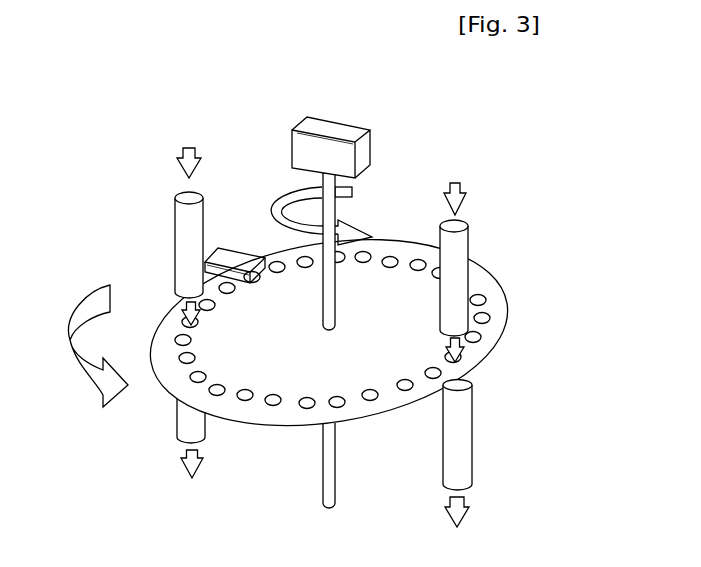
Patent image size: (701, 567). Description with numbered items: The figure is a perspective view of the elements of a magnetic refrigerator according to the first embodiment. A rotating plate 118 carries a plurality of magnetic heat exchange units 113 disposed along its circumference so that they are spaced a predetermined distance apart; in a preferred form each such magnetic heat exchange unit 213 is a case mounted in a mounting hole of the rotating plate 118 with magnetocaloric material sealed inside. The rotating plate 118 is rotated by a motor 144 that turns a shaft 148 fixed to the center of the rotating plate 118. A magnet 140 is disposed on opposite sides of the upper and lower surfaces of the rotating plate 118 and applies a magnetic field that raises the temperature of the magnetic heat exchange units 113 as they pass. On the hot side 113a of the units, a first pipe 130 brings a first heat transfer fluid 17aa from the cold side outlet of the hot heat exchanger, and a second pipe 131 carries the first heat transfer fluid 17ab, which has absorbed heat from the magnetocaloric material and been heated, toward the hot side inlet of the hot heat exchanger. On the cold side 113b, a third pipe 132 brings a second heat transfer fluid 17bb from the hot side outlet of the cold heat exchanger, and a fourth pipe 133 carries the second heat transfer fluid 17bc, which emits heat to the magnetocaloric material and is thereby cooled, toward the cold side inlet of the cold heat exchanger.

The rotating plate 118 is at (497, 315).
The magnetic heat exchange units 113 is at (332, 396).
The magnetic heat exchange unit 213 is at (303, 415).
The hot side 113a is at (177, 306).
The cold side 113b is at (466, 352).
The first pipe 130 is at (186, 228).
The second pipe 131 is at (190, 418).
The third pipe 132 is at (458, 240).
The fourth pipe 133 is at (462, 423).
The magnet 140 is at (237, 249).
The motor 144 is at (338, 127).
The shaft 148 is at (336, 208).
The first heat transfer fluid 17aa is at (179, 154).
The second heat transfer fluid 17bb is at (465, 188).
The first heat transfer fluid 17ab is at (183, 462).
The second heat transfer fluid 17bc is at (450, 512).